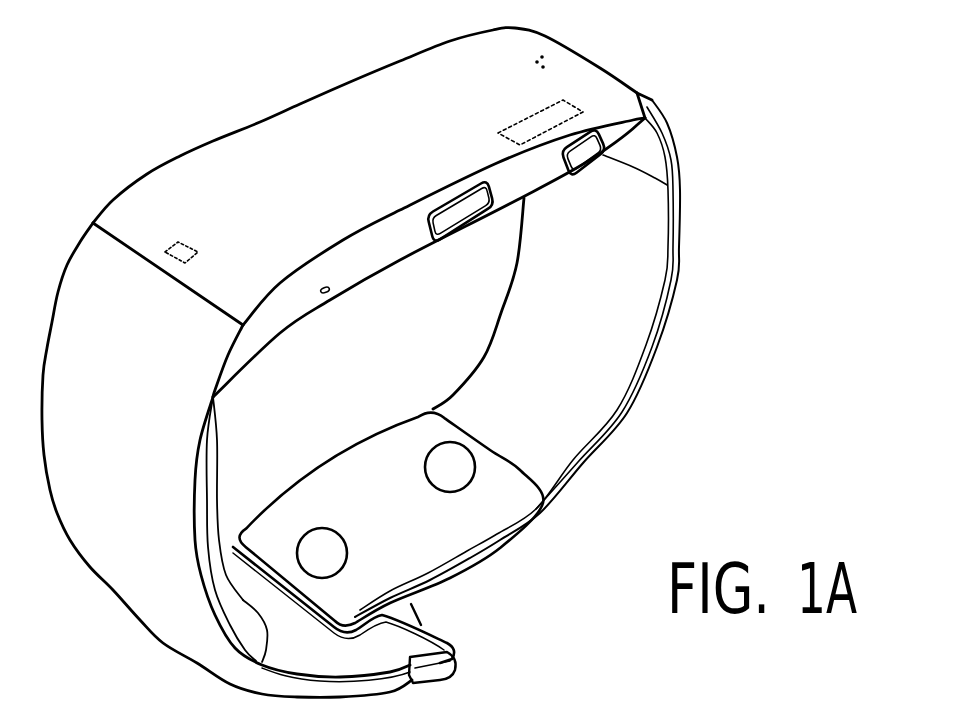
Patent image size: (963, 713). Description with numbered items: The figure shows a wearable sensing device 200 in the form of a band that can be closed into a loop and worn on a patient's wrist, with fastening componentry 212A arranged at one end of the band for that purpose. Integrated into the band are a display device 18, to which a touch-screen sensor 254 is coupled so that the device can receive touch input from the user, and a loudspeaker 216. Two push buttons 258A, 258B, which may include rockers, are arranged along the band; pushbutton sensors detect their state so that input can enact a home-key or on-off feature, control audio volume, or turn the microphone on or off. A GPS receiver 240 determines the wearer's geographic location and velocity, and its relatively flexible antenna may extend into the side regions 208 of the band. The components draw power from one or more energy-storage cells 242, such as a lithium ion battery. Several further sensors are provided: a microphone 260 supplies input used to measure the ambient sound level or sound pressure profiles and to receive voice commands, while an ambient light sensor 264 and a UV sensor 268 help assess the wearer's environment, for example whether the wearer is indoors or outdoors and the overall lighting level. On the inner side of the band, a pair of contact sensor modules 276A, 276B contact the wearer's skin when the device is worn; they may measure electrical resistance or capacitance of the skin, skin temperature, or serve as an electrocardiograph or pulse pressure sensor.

The wearable sensing device 200 is at (98, 84).
The display device 18 is at (388, 146).
The side regions 208 is at (713, 312).
The fastening componentry 212A is at (421, 626).
The loudspeaker 216 is at (545, 58).
The GPS receiver 240 is at (565, 103).
The energy-storage cell 242 is at (142, 500).
The touch-screen sensor 254 is at (426, 102).
The push button 258A is at (457, 217).
The push button 258B is at (580, 157).
The microphone 260 is at (332, 288).
The ambient light sensor 264 is at (190, 262).
The UV sensor 268 is at (550, 702).
The contact sensor module 276A is at (449, 442).
The contact sensor module 276B is at (322, 527).